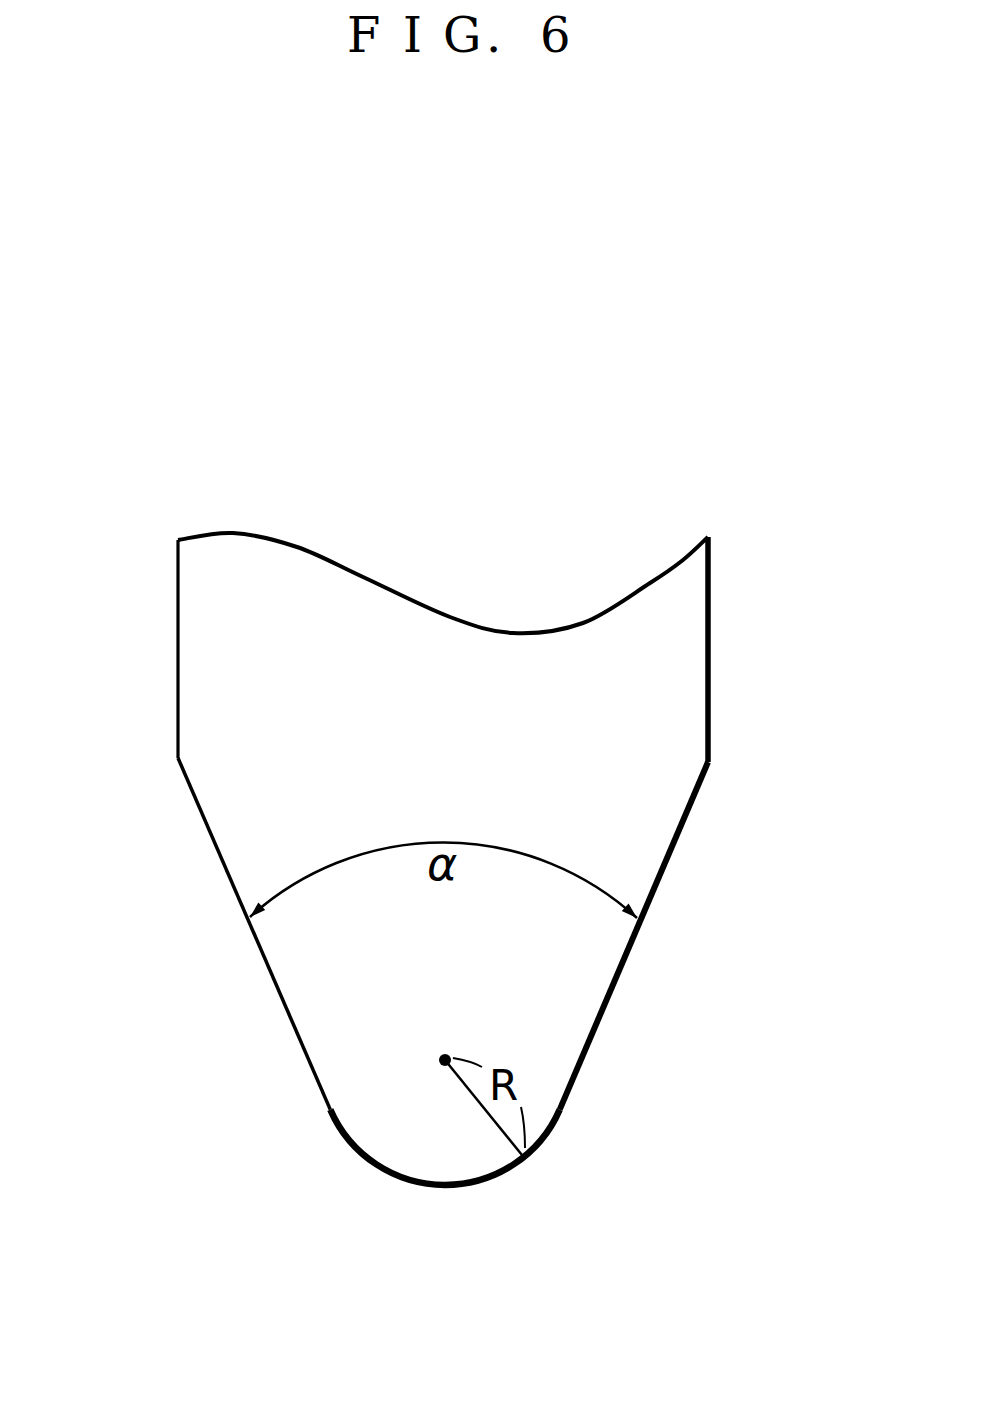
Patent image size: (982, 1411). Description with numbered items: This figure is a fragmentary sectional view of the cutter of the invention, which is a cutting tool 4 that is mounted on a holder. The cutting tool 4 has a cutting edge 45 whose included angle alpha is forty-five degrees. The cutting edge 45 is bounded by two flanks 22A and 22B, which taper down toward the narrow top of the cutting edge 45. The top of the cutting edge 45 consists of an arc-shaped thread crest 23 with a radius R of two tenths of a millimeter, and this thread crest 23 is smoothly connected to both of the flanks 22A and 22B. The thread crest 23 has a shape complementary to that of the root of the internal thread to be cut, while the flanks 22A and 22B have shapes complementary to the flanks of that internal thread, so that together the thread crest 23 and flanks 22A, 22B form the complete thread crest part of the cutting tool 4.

The cutting tool 4 is at (787, 497).
The flank 22A is at (666, 866).
The flank 22B is at (215, 860).
The thread crest 23 is at (377, 1135).
The cutting edge 45 is at (592, 1122).